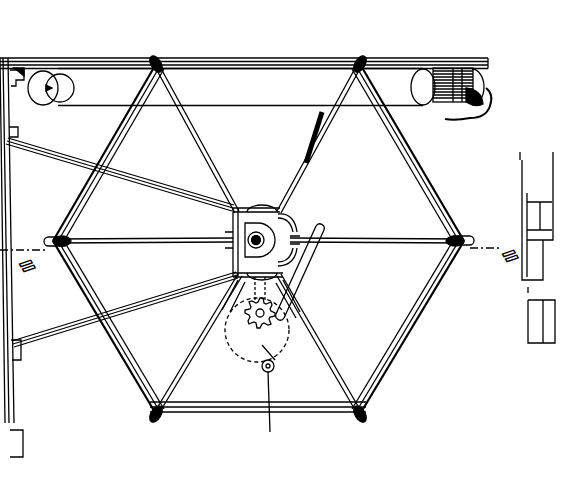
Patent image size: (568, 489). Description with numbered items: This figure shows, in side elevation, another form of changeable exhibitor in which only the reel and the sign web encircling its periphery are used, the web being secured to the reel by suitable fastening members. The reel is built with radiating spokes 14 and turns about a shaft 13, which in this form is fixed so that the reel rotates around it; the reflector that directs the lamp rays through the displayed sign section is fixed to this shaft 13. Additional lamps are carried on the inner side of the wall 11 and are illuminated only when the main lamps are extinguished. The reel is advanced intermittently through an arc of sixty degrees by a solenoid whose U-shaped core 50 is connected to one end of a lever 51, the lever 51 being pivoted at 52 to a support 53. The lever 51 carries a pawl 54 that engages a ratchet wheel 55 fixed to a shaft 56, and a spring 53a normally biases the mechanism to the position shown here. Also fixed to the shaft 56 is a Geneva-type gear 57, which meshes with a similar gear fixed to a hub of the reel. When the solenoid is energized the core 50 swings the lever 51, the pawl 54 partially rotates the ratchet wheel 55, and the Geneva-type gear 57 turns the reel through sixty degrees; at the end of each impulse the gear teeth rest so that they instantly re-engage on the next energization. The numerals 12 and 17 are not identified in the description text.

The wall 11 is at (416, 57).
The hub 12 is at (262, 207).
The shaft 13 is at (210, 150).
The spokes 14 is at (211, 129).
The belt 17 is at (275, 107).
The U-shaped core 50 is at (296, 222).
The lever 51 is at (320, 258).
The pivot 52 is at (275, 368).
The support 53 is at (262, 362).
The spring 53a is at (274, 419).
The pawl 54 is at (312, 305).
The ratchet wheel 55 is at (238, 345).
The shaft 56 is at (248, 312).
The Geneva-type gear 57 is at (292, 330).